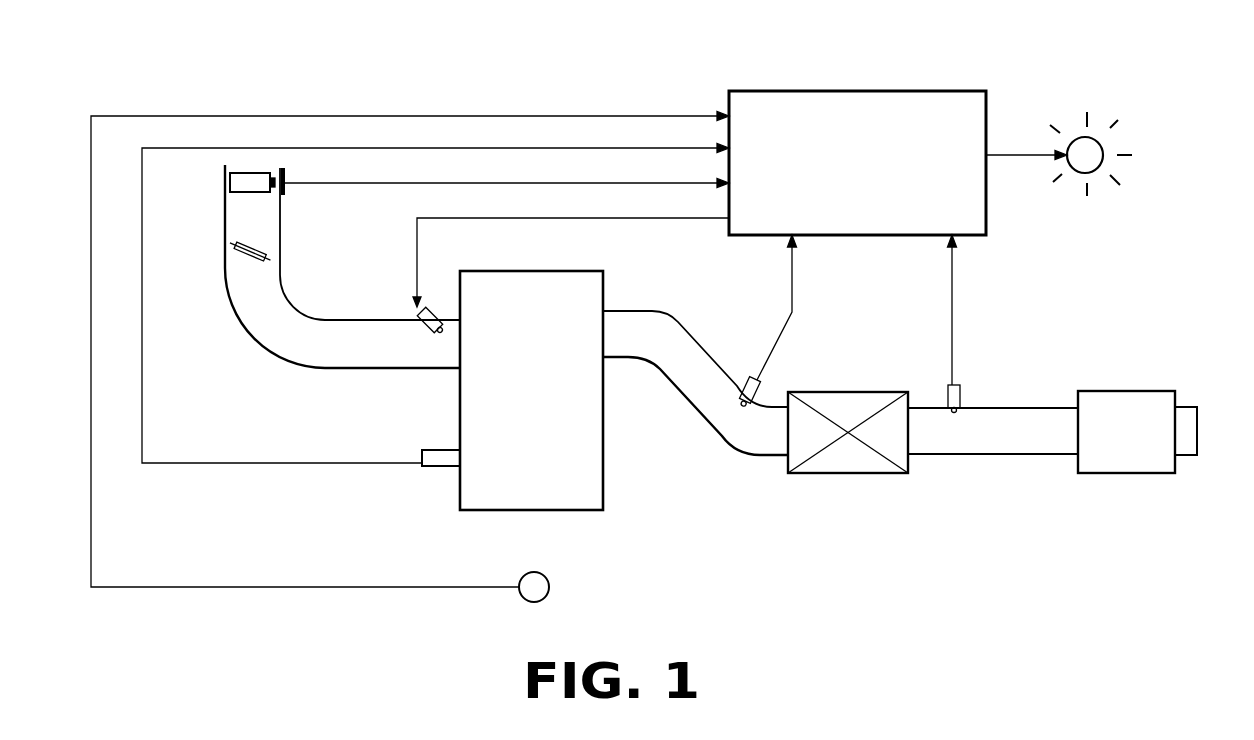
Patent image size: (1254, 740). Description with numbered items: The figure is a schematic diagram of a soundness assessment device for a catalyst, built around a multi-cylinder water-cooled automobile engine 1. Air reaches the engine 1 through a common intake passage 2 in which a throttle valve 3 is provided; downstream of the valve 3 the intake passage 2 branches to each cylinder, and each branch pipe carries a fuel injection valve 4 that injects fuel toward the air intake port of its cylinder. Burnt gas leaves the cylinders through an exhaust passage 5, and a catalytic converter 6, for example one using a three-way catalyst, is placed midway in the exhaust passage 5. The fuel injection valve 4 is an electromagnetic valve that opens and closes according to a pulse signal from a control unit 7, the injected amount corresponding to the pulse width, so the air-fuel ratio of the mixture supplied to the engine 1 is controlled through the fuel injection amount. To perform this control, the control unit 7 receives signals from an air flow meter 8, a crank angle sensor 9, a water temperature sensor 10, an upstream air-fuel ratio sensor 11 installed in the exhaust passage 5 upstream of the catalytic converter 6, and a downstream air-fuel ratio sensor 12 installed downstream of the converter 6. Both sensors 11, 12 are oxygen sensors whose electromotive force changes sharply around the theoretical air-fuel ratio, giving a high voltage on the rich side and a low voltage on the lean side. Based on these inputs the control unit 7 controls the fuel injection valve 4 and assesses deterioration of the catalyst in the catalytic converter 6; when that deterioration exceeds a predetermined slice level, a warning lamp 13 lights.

The engine 1 is at (620, 289).
The intake passage 2 is at (225, 210).
The throttle valve 3 is at (250, 252).
The fuel injection valve 4 is at (418, 309).
The exhaust passage 5 is at (673, 323).
The catalytic converter 6 is at (818, 476).
The control unit 7 is at (888, 91).
The air flow meter 8 is at (286, 195).
The crank angle sensor 9 is at (540, 587).
The water temperature sensor 10 is at (434, 466).
The upstream air-fuel ratio sensor 11 is at (766, 392).
The downstream air-fuel ratio sensor 12 is at (963, 388).
The warning lamp 13 is at (1093, 137).